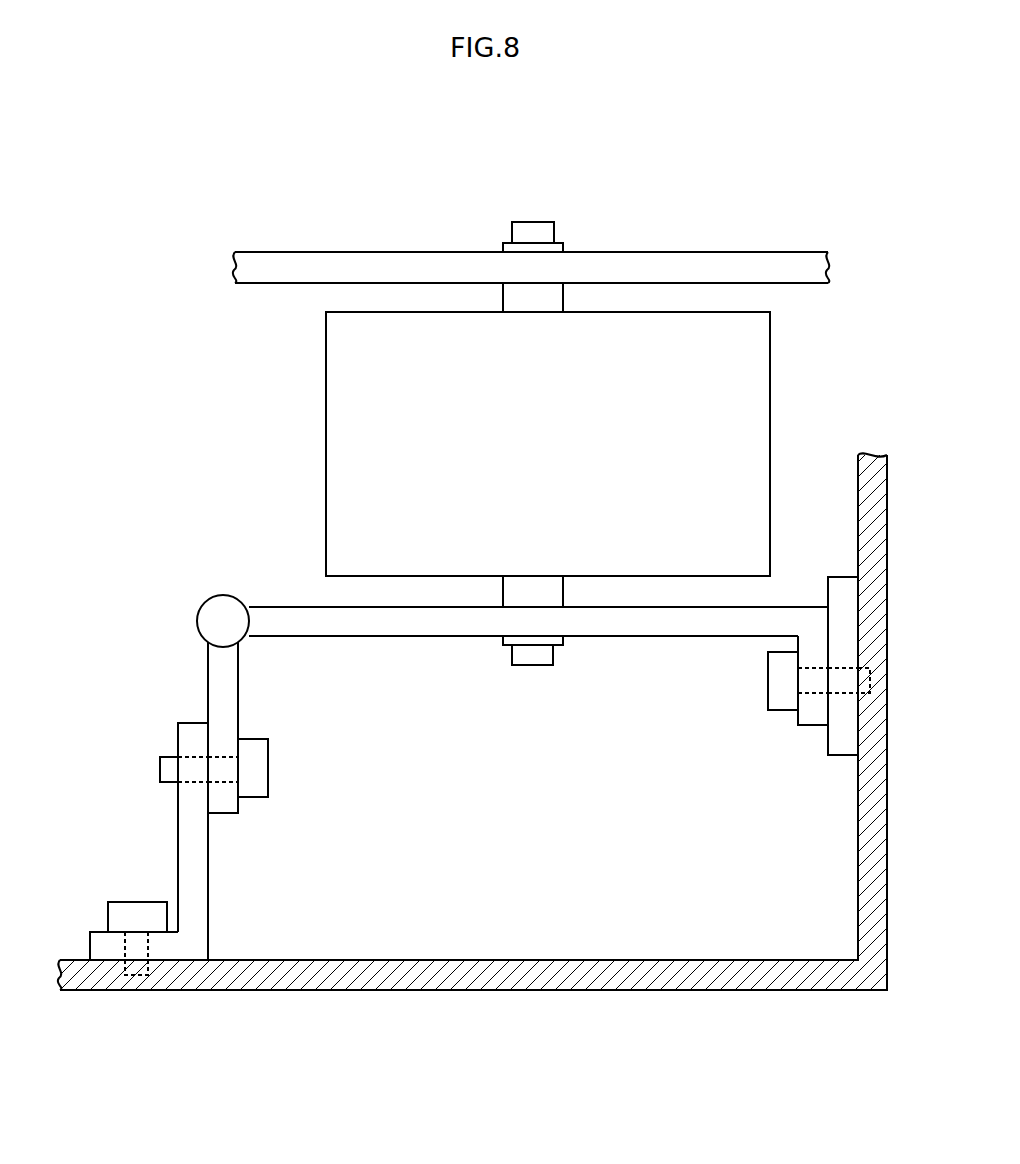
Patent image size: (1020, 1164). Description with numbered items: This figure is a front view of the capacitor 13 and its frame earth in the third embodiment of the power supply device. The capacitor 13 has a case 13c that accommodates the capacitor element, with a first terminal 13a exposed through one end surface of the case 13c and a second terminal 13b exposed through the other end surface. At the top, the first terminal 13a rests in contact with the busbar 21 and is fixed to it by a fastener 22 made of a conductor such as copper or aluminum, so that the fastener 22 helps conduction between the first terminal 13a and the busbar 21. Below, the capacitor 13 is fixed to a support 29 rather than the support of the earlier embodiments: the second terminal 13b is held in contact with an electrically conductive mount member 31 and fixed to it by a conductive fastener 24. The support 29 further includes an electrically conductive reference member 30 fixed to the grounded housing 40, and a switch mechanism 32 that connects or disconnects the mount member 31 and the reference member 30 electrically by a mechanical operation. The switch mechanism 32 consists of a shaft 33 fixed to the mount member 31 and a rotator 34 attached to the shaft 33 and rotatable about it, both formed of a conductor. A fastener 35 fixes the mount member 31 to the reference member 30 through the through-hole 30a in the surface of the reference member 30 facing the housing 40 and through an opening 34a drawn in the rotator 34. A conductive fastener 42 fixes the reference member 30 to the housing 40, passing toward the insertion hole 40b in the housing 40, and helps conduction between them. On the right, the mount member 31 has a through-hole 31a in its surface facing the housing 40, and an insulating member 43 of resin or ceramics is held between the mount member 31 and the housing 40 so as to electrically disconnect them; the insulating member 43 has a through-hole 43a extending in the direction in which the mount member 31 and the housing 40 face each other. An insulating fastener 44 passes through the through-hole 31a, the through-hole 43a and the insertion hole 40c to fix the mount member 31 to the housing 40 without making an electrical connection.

The capacitor 13 is at (617, 458).
The first terminal 13a is at (517, 298).
The second terminal 13b is at (517, 592).
The case 13c is at (752, 428).
The busbar 21 is at (683, 268).
The fastener 22 is at (533, 240).
The fastener 24 is at (535, 655).
The support 29 is at (283, 786).
The reference member 30 is at (202, 890).
The through-hole 30a is at (185, 746).
The mount member 31 is at (539, 612).
The through-hole 31a is at (810, 660).
The switch mechanism 32 is at (182, 566).
The shaft 33 is at (225, 607).
The rotator 34 is at (228, 793).
The fastening hole of bracket 34a is at (226, 747).
The fastener 35 is at (253, 765).
The housing 40 is at (520, 700).
The insertion hole 40b is at (156, 963).
The insertion hole 40c is at (860, 660).
The fastener 42 is at (137, 903).
The insulating member 43 is at (799, 711).
The through-hole 43a is at (830, 693).
The fastener 44 is at (772, 680).